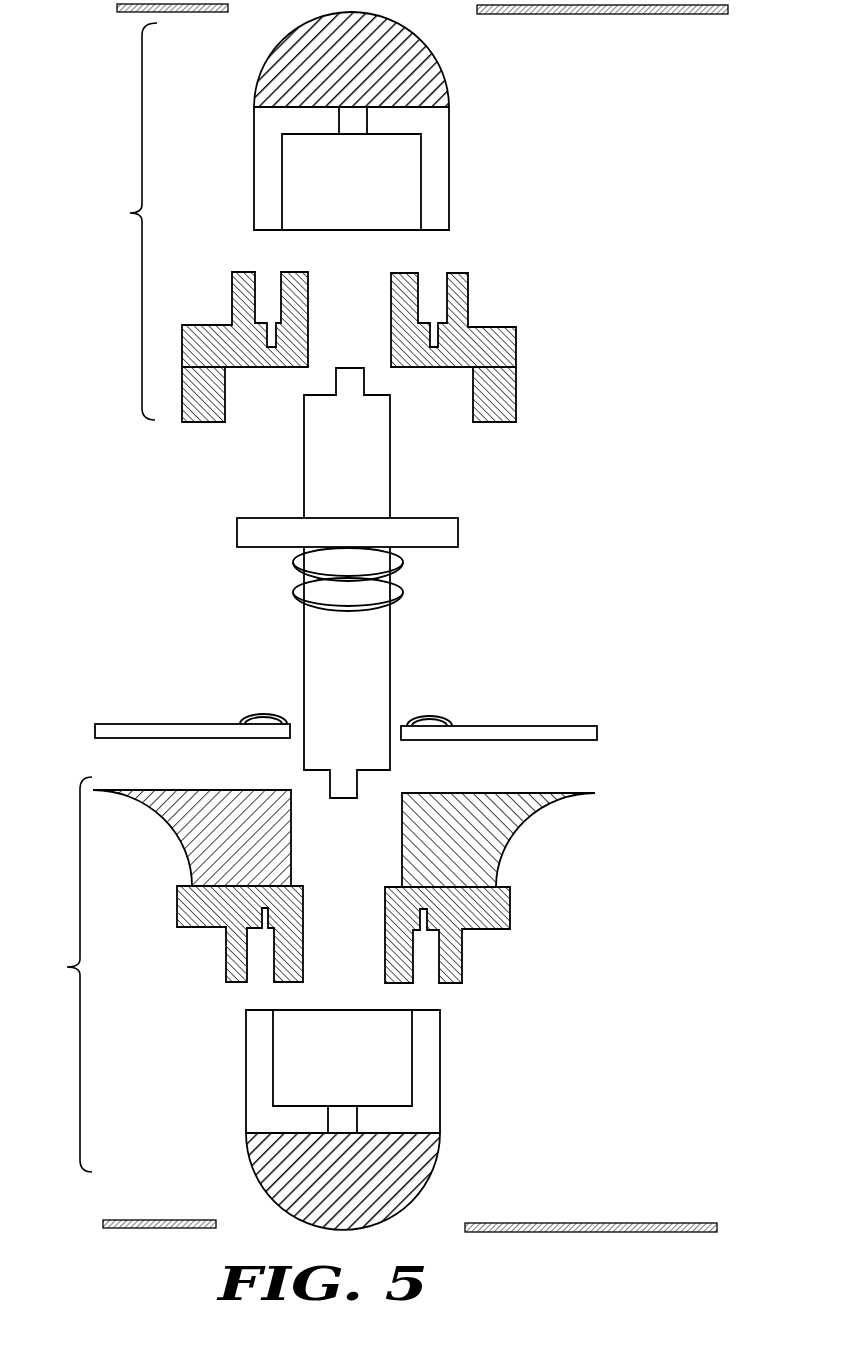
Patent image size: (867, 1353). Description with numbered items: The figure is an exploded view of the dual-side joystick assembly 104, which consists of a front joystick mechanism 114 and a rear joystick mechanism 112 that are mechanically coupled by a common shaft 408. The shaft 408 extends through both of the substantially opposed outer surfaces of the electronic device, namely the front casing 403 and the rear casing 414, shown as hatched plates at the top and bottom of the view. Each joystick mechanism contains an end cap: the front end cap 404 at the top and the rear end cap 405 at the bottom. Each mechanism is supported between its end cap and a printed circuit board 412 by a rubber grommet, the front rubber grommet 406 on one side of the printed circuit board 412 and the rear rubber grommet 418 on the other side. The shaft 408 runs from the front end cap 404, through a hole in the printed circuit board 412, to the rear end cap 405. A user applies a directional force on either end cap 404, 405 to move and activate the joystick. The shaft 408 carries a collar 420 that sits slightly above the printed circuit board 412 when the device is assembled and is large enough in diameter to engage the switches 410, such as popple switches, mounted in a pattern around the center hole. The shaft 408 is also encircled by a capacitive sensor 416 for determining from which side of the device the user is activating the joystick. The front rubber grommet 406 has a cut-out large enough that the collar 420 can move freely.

The dual-side joystick assembly 104 is at (141, 1293).
The rear joystick mechanism 112 is at (57, 974).
The front joystick mechanism 114 is at (121, 221).
The front casing 403 is at (604, 17).
The front end cap 404 is at (470, 135).
The rear end cap 405 is at (450, 1065).
The front rubber grommet 406 is at (530, 385).
The shaft 408 is at (399, 470).
The switches 410 is at (258, 712).
The printed circuit board 412 is at (600, 723).
The rear casing 414 is at (567, 1222).
The capacitive sensor 416 is at (409, 563).
The rear rubber grommet 418 is at (523, 842).
The collar 420 is at (460, 533).